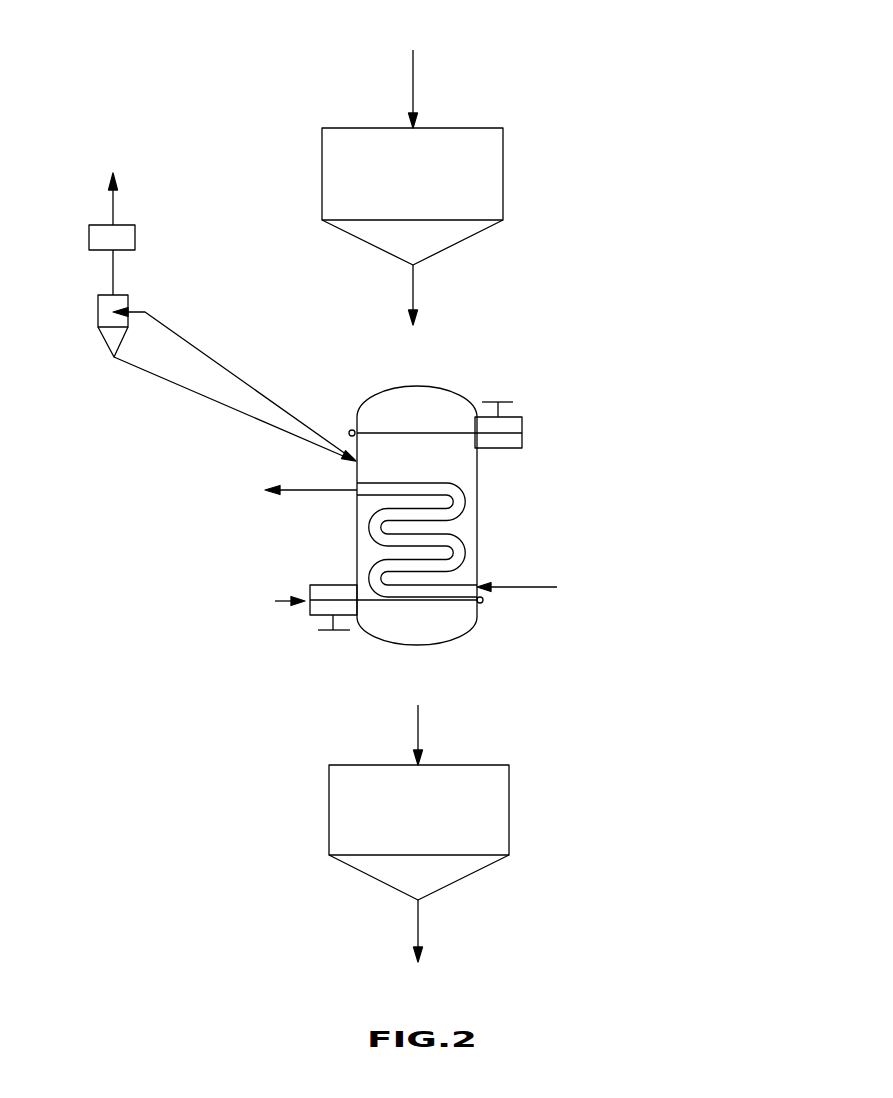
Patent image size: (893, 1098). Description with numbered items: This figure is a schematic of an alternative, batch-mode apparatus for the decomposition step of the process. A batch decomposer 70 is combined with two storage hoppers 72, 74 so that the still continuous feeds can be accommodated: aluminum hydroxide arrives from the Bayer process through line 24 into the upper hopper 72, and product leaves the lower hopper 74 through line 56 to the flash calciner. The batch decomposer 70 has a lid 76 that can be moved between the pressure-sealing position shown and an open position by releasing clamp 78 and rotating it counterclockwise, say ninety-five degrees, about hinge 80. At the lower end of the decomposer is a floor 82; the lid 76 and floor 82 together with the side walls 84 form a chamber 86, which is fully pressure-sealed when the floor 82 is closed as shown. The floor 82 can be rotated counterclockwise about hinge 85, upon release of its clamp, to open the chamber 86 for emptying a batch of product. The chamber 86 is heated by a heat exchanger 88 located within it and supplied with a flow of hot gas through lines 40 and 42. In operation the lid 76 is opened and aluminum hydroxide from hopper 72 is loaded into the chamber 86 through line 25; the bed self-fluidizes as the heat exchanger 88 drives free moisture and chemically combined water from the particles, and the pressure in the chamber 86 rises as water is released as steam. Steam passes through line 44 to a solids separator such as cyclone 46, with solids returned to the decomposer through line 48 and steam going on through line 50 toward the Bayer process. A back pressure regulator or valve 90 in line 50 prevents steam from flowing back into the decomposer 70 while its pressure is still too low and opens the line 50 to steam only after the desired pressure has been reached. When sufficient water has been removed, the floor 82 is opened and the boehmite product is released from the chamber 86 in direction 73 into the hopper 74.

The line 24 is at (413, 80).
The line 25 is at (413, 295).
The line 40 is at (557, 587).
The line 42 is at (295, 493).
The line 44 is at (222, 360).
The cyclone 46 is at (98, 312).
The line 48 is at (207, 398).
The line 50 is at (113, 203).
The line 56 is at (419, 921).
The batch decomposer 70 is at (415, 502).
The storage hopper 72 is at (429, 187).
The direction 73 is at (418, 710).
The storage hopper 74 is at (434, 823).
The lid 76 is at (447, 395).
The clamp 78 is at (538, 416).
The hinge 80 is at (350, 430).
The floor 82 is at (474, 620).
The side walls 84 is at (357, 557).
The hinge 85 is at (485, 601).
The chamber 86 is at (431, 468).
The heat exchanger 88 is at (465, 547).
The back pressure regulator or valve 90 is at (135, 240).